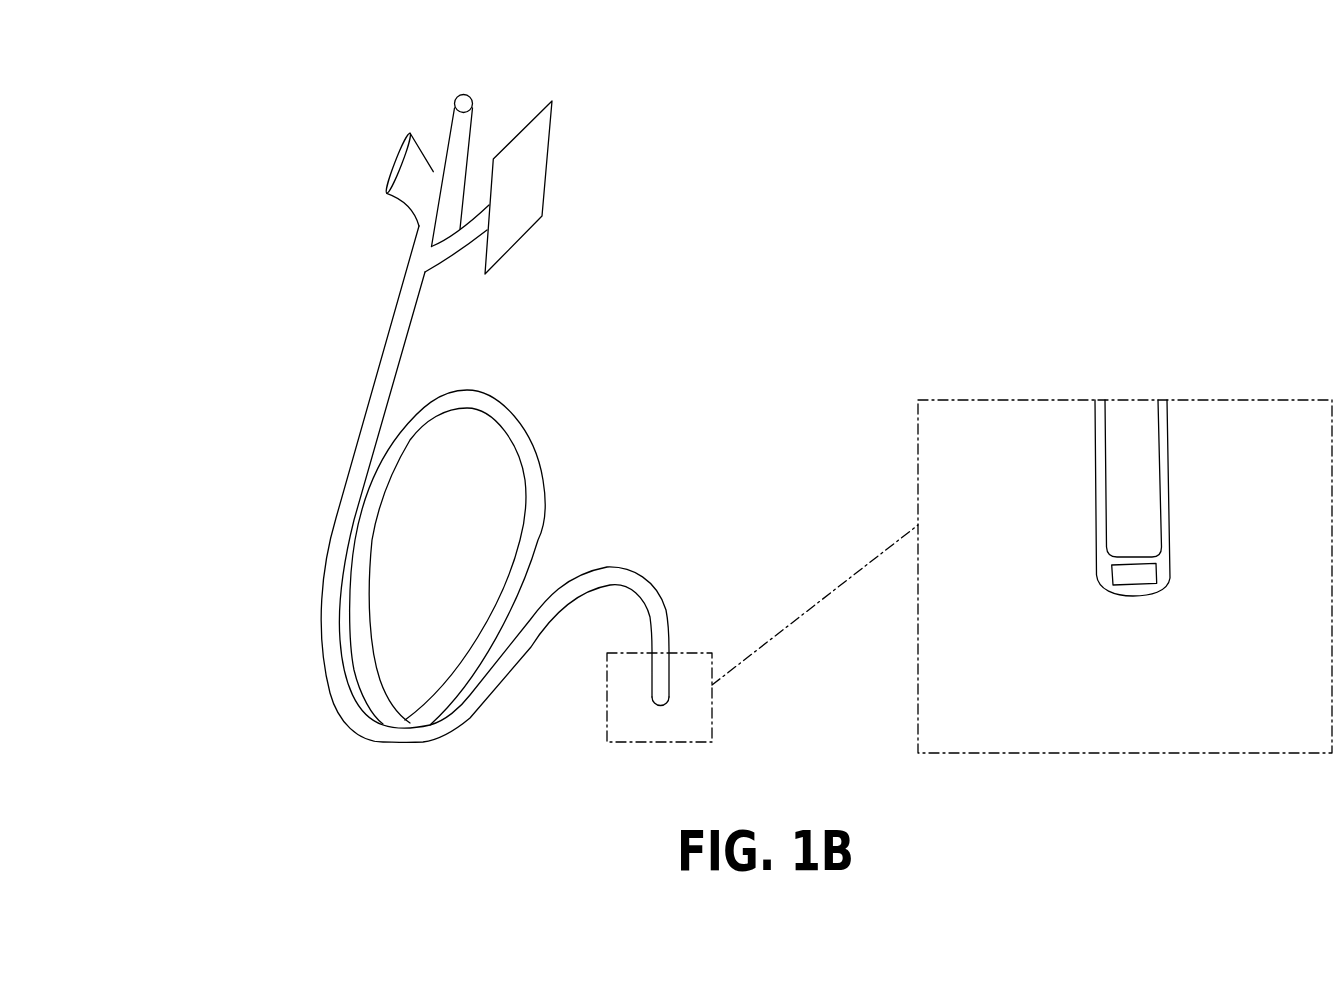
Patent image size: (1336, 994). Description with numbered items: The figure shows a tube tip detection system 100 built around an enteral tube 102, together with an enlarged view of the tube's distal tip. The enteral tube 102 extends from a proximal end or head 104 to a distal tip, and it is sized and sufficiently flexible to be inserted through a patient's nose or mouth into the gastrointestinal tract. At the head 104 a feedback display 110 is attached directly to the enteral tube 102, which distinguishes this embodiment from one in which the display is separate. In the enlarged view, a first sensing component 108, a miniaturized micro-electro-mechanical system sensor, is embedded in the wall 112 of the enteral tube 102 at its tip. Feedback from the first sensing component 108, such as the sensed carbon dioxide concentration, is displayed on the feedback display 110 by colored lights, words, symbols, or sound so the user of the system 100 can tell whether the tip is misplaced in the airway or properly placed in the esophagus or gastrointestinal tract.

The tube tip detection system 100 is at (302, 158).
The enteral tube 102 is at (382, 390).
The proximal end or head 104 is at (475, 87).
The first sensing component 108 is at (1140, 583).
The feedback display 110 is at (540, 153).
The wall 112 is at (1167, 485).